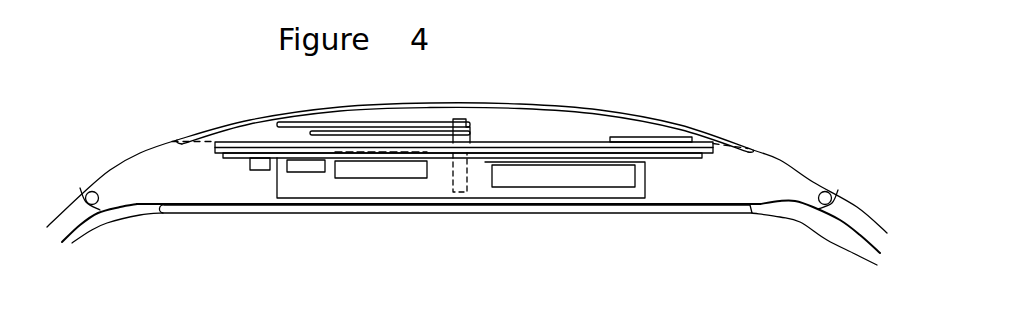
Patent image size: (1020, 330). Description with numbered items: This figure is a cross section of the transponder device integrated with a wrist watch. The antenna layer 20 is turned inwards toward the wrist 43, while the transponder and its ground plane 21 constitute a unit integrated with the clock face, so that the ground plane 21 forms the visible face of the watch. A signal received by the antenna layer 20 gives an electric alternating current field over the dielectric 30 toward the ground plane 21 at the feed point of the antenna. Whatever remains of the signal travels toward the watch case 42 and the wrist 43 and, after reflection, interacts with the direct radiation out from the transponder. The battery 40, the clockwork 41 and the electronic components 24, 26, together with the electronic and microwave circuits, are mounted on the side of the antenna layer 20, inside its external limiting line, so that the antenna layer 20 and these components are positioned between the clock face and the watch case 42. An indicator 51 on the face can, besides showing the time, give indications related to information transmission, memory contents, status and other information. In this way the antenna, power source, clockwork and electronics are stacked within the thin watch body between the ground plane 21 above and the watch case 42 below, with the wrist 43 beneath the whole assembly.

The antenna layer 20 is at (668, 160).
The ground plane 21 is at (585, 142).
The electronic component 24 is at (262, 171).
The electronic component 26 is at (388, 168).
The dielectric 30 is at (499, 150).
The battery 40 is at (582, 177).
The clockwork 41 is at (328, 186).
The watch case 42 is at (197, 203).
The wrist 43 is at (152, 242).
The indicator 51 is at (670, 140).